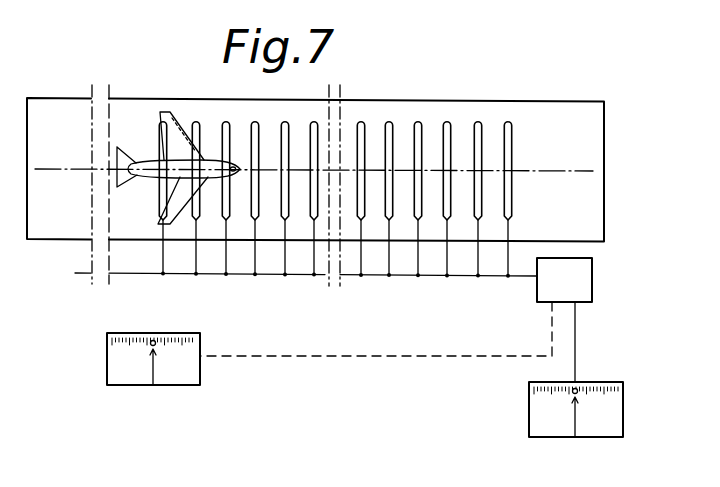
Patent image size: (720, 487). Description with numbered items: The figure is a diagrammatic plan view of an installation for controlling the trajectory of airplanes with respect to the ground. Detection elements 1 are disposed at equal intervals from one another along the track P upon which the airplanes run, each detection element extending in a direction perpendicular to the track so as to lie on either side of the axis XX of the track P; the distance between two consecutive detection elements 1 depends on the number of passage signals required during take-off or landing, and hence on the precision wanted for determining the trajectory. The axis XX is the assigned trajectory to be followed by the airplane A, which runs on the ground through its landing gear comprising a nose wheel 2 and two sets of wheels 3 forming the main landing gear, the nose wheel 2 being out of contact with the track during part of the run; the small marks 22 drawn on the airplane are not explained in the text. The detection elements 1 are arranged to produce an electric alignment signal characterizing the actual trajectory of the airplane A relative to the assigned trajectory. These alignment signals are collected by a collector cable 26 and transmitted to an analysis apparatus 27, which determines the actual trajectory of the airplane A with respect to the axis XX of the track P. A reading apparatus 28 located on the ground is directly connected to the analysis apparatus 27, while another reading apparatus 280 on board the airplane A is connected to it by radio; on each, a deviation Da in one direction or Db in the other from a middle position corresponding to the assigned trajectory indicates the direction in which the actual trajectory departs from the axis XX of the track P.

The detection elements 1 is at (279, 135).
The nose wheel 2 is at (199, 180).
The sets of wheels 3 is at (180, 171).
The wing marks 22 is at (184, 157).
The collector cable 26 is at (431, 277).
The analysis apparatus 27 is at (564, 280).
The reading apparatus 28 is at (613, 427).
The reading apparatus 280 is at (170, 385).
The airplane A is at (134, 176).
The track P is at (203, 234).
The axis XX X is at (254, 187).